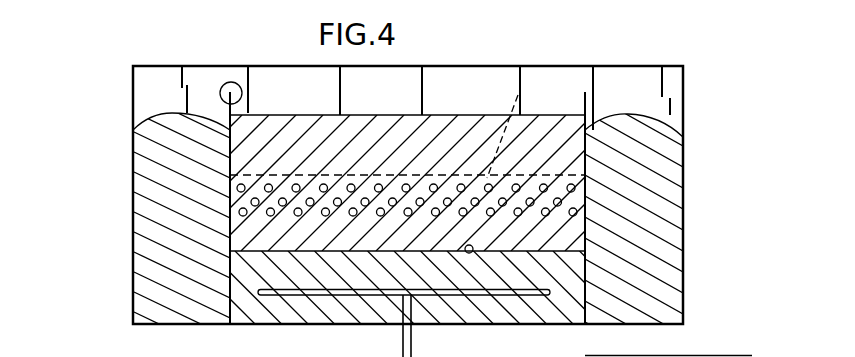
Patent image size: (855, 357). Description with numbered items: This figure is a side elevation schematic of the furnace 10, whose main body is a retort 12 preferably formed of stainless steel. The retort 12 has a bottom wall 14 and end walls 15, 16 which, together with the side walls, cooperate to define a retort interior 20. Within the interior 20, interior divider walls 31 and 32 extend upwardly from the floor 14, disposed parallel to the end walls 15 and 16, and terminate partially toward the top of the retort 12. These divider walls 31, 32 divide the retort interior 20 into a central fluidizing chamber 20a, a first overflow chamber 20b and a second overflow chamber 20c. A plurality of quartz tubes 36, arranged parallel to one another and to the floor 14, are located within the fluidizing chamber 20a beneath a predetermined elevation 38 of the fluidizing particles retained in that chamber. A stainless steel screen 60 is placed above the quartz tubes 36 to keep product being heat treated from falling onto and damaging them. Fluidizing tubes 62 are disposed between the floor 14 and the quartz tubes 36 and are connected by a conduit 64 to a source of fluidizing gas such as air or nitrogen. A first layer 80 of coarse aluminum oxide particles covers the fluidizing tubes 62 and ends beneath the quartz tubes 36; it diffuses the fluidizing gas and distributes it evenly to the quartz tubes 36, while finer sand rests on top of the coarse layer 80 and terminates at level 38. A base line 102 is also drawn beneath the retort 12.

The furnace 10 is at (90, 78).
The retort 12 is at (132, 262).
The bottom wall 14 is at (520, 324).
The end wall 15 is at (134, 137).
The end wall 16 is at (683, 160).
The retort interior 20 is at (478, 102).
The fluidizing chamber 20a is at (309, 102).
The first overflow chamber 20b is at (163, 76).
The second overflow chamber 20c is at (668, 110).
The interior divider wall 31 is at (197, 108).
The interior divider wall 32 is at (615, 108).
The quartz tubes 36 is at (337, 177).
The predetermined elevation 38 is at (437, 112).
The stainless steel screen 60 is at (592, 80).
The fluidizing tubes 62 is at (297, 296).
The conduit 64 is at (413, 347).
The first layer of coarse particles 80 is at (470, 253).
The base line 102 is at (752, 356).